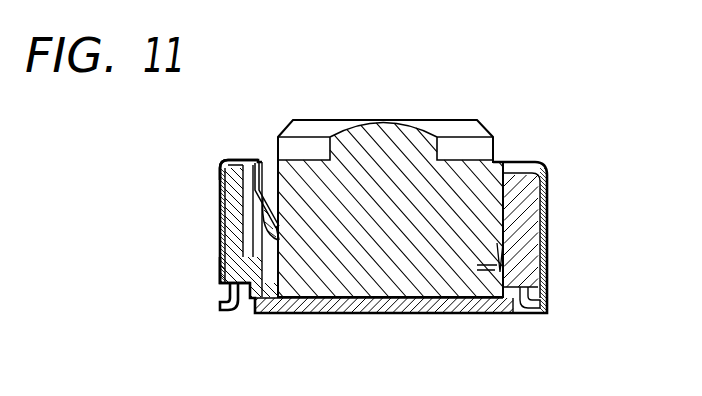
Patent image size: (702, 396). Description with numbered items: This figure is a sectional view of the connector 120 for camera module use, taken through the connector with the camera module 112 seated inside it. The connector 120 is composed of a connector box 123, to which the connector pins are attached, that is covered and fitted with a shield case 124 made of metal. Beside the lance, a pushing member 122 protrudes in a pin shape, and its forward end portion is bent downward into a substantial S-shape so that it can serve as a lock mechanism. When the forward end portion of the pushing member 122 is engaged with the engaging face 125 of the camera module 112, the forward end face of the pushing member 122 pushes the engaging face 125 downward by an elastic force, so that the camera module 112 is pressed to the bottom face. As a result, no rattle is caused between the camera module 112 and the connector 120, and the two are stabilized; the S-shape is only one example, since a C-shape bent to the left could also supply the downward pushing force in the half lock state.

The connector for camera module use 120 is at (370, 94).
The camera module 112 is at (426, 136).
The pushing member 122 is at (222, 199).
The connector box 123 is at (222, 274).
The shield case 124 is at (222, 166).
The engaging face 125 is at (280, 240).